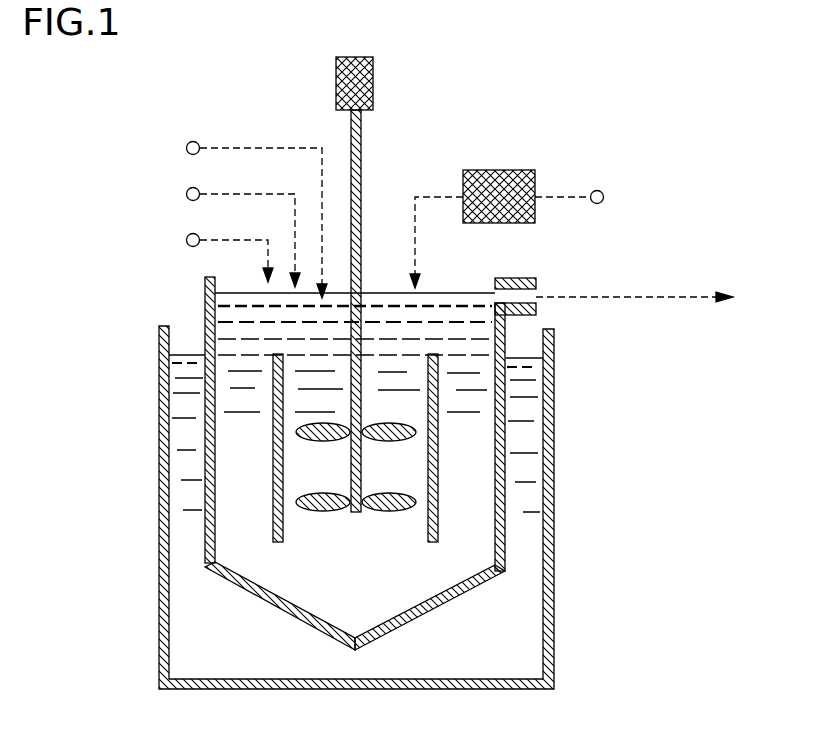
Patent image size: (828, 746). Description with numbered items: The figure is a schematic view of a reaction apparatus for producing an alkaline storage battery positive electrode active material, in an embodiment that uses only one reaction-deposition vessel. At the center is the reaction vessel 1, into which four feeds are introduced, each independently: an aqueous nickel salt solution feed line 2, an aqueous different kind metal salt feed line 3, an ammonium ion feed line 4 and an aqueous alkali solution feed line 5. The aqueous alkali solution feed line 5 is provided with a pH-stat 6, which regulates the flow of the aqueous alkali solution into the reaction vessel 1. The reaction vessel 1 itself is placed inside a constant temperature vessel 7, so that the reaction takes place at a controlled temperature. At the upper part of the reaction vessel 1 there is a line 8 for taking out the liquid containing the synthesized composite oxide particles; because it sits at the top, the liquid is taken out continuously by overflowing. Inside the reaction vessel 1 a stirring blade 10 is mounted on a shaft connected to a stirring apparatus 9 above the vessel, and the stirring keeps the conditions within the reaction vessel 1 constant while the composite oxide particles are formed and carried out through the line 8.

The reaction vessel 1 is at (430, 612).
The aqueous nickel salt solution feed line 2 is at (250, 147).
The aqueous different kind metal salt feed line 3 is at (277, 158).
The ammonium ion feed line 4 is at (249, 240).
The aqueous alkali solution feed line 5 is at (415, 197).
The pH-stat 6 is at (498, 170).
The constant temperature vessel 7 is at (555, 666).
The line for taking out liquid 8 is at (688, 297).
The stirring apparatus 9 is at (375, 77).
The stirring blade 10 is at (323, 513).